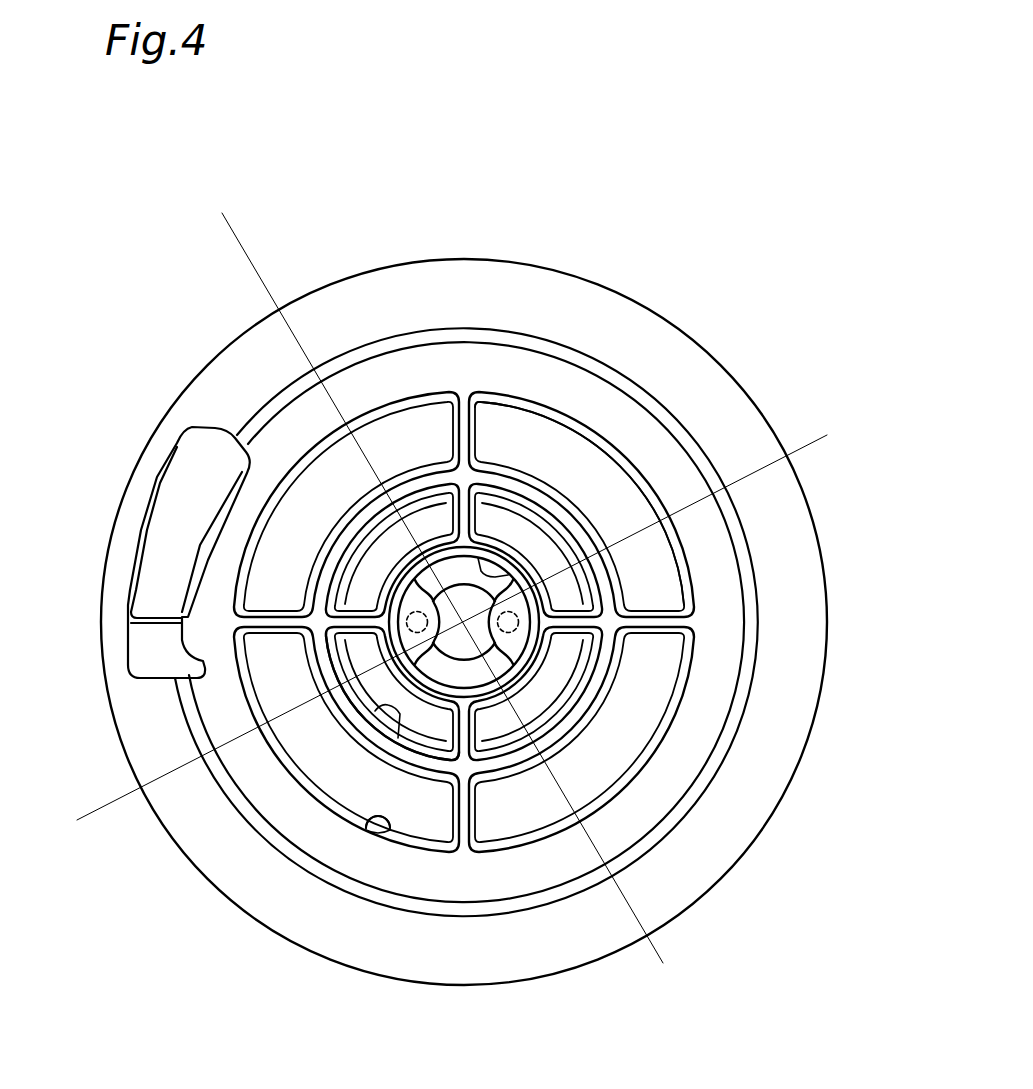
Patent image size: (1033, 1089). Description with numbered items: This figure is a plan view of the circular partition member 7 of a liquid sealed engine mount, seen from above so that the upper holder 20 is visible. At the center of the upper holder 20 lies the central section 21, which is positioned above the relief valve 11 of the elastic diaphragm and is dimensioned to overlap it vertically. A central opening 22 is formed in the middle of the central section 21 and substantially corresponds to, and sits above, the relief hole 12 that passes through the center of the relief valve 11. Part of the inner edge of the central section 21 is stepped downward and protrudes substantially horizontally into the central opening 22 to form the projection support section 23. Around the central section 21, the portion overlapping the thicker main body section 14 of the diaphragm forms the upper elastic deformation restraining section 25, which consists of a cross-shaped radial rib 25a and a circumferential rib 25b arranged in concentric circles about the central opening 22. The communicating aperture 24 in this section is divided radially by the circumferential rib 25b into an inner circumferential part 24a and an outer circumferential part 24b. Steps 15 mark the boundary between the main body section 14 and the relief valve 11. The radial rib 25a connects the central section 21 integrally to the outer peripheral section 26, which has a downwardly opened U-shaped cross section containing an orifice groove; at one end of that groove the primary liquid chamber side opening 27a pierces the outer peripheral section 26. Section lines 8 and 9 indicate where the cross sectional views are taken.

The partition member 7 is at (183, 353).
The section line 8- 8 is at (827, 435).
The section line 9- 9 is at (222, 213).
The relief valve 11 is at (440, 724).
The relief hole 12 is at (478, 606).
The main body section 14 is at (590, 757).
The steps 15 is at (515, 745).
The upper holder 20 is at (238, 353).
The central section 21 is at (437, 553).
The central opening 22 is at (515, 525).
The projection support section 23 is at (508, 632).
The communicating aperture 24 is at (163, 930).
The inner circumferential part 24a is at (366, 816).
The outer circumferential part 24b is at (362, 834).
The upper elastic deformation restraining section 25 is at (640, 243).
The radial rib 25a is at (470, 431).
The circumferential rib 25b is at (519, 478).
The outer peripheral section 26 is at (795, 512).
The primary liquid chamber side opening 27a is at (128, 586).